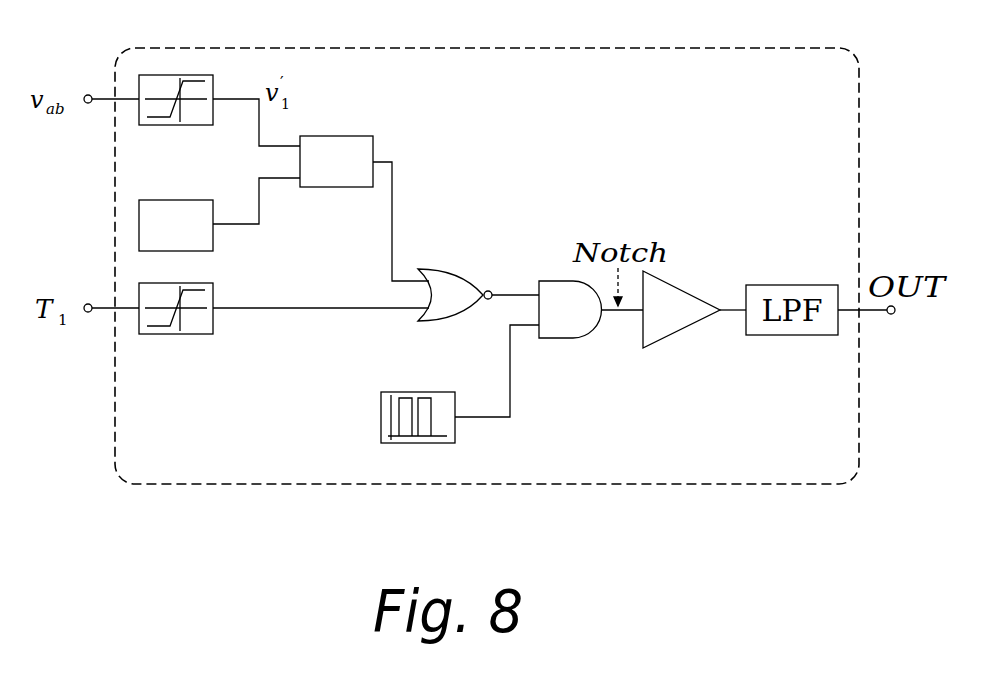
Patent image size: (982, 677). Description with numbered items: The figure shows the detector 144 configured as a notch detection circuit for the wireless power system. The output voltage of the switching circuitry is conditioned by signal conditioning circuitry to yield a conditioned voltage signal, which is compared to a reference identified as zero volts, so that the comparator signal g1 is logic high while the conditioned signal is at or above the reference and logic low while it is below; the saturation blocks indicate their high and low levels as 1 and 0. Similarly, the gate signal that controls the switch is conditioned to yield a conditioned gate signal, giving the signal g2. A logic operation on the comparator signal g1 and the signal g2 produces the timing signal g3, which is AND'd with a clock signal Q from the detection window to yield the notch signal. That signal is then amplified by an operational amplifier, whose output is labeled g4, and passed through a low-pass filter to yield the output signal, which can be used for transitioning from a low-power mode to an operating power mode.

The detector 144 is at (488, 48).
The saturation block for v_ab 1 is at (186, 98).
The zero constant block 0 is at (219, 214).
The comparator signal g1 is at (364, 202).
The signal g2 is at (284, 313).
The timing signal g3 is at (478, 288).
The gain amplifier g4 is at (694, 307).
The clock signal Q is at (387, 385).